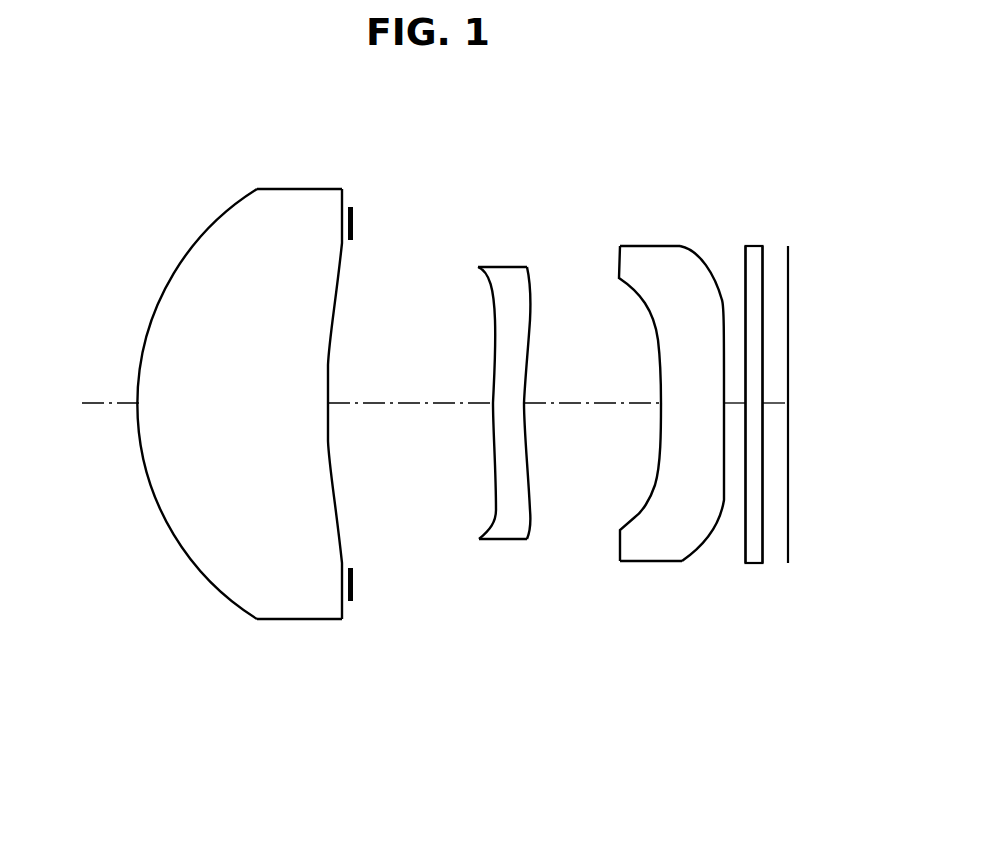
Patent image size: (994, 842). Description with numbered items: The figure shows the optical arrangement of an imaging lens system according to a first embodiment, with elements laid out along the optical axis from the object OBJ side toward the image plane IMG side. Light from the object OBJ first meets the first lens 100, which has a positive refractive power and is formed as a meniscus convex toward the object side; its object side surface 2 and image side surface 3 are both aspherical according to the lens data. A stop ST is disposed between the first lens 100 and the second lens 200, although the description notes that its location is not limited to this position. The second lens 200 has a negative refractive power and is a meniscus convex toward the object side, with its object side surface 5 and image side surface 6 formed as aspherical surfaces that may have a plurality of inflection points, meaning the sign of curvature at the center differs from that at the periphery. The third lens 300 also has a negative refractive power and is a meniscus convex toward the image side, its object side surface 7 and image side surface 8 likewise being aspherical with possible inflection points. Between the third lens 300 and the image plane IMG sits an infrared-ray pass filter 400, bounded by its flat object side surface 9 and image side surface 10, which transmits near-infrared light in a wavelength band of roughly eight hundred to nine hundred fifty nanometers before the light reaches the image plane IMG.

The first lens 100 is at (264, 387).
The second lens 200 is at (508, 390).
The third lens 300 is at (662, 389).
The infrared-ray pass filter 400 is at (754, 389).
The object side surface of first lens 2 is at (212, 584).
The image side surface of first lens 3 is at (338, 521).
The object side surface of second lens 5 is at (487, 529).
The image side surface of second lens 6 is at (527, 529).
The object side surface of third lens 7 is at (634, 518).
The image side surface of third lens 8 is at (700, 550).
The object side surface of IR pass filter 9 is at (746, 550).
The image side surface of IR pass filter 10 is at (762, 550).
The stop ST is at (351, 590).
The object OBJ is at (50, 404).
The image plane IMG is at (789, 545).